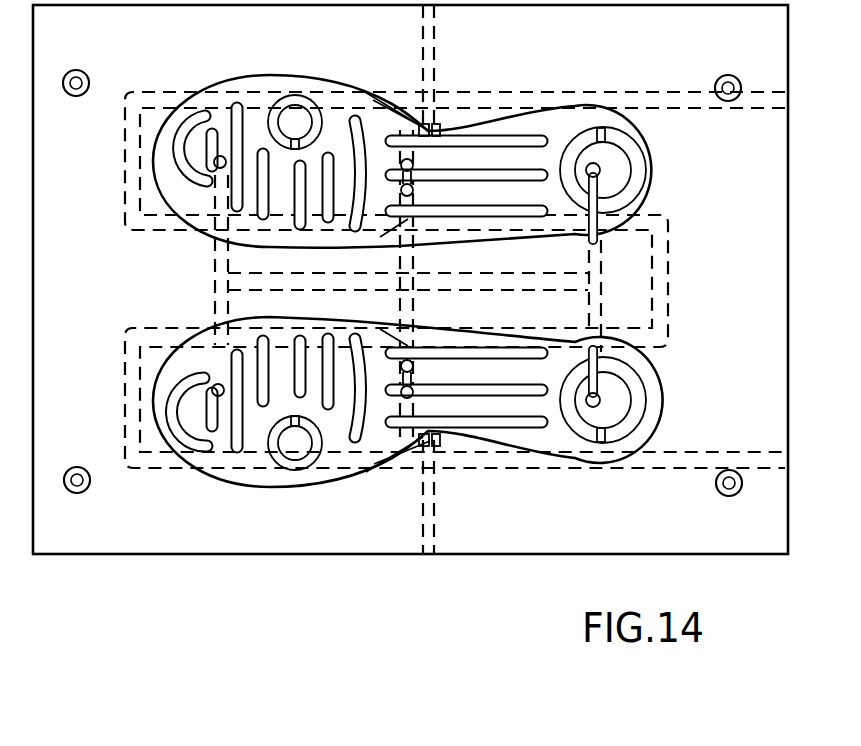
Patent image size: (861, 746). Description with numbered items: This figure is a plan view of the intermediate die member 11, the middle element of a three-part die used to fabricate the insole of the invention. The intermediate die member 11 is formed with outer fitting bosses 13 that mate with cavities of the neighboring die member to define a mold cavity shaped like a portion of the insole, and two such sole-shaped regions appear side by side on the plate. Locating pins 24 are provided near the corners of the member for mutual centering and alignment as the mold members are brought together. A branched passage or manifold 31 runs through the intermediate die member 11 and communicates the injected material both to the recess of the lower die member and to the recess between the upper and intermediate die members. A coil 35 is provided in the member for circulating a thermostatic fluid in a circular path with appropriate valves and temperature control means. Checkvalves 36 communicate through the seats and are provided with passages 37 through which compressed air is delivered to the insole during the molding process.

The intermediate die member 11 is at (168, 530).
The fitting boss 13 is at (275, 477).
The locating pin 24 is at (80, 493).
The branched passage or manifold 31 is at (272, 278).
The coil 35 is at (690, 457).
The checkvalve 36 is at (436, 440).
The passage 37 is at (423, 513).